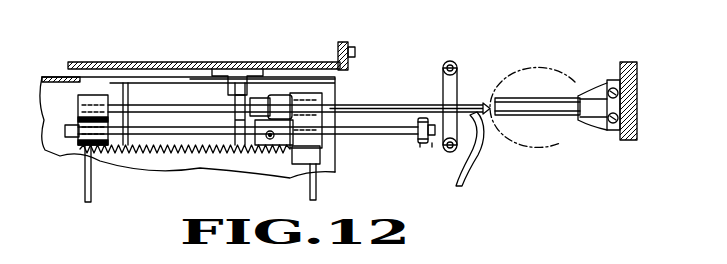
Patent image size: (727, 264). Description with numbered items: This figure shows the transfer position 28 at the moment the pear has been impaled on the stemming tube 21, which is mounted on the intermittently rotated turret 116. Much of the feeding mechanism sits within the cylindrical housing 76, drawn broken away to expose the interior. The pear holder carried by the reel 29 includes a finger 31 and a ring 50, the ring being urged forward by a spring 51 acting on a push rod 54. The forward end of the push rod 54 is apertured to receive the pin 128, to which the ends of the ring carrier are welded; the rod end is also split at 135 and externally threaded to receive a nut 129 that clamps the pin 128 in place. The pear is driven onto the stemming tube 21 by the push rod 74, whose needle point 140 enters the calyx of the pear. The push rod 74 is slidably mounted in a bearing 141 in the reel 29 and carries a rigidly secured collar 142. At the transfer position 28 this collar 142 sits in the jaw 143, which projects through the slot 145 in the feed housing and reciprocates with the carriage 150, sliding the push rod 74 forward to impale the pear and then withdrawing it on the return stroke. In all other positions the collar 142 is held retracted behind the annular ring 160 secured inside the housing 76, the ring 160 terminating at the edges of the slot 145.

The stemming tube 21 is at (581, 116).
The transfer position 28 is at (500, 52).
The reel 29 is at (88, 203).
The finger 31 is at (470, 182).
The ring 50 is at (450, 61).
The spring 51 is at (199, 160).
The push rod 54 is at (412, 137).
The push rod 74 is at (395, 105).
The cylindrical housing 76 is at (65, 76).
The turret 116 is at (637, 92).
The pin 128 is at (432, 143).
The nut 129 is at (420, 143).
The split 135 is at (427, 117).
The needle point 140 is at (494, 84).
The bearing 141 is at (322, 99).
The collar 142 is at (238, 100).
The jaw 143 is at (238, 69).
The slot 145 is at (166, 68).
The carriage 150 is at (262, 69).
The annular ring 160 is at (127, 99).